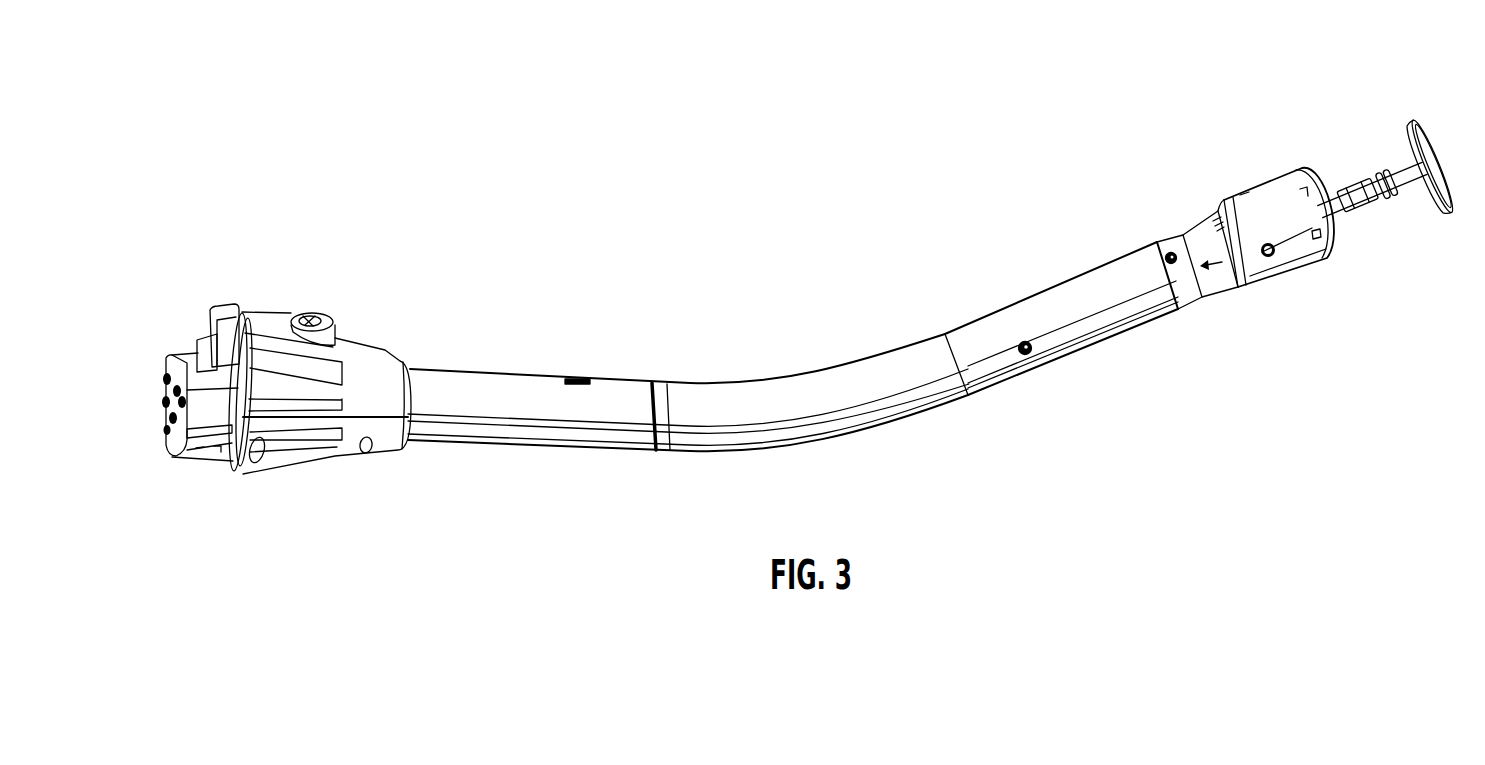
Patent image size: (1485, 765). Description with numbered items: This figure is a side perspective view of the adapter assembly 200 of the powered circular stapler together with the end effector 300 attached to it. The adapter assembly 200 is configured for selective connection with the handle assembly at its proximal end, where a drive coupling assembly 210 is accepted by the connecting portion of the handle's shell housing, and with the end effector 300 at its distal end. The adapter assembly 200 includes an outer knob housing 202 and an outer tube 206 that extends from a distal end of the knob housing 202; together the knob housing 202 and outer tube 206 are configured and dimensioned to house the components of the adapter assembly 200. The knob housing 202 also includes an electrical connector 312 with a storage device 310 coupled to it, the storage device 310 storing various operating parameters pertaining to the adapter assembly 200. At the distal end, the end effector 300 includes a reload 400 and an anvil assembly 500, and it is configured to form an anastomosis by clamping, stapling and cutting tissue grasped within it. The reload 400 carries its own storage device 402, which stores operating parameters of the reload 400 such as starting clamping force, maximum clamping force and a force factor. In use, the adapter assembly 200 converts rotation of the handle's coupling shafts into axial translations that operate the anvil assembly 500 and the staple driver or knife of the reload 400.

The adapter assembly 200 is at (740, 362).
The outer knob housing 202 is at (378, 352).
The outer tube 206 is at (912, 344).
The drive coupling assembly 210 is at (179, 338).
The end effector 300 is at (1361, 101).
The storage device 310 is at (209, 450).
The electrical connector 312 is at (164, 434).
The reload 400 is at (1282, 183).
The storage device 402 is at (1190, 232).
The anvil assembly 500 is at (1427, 137).